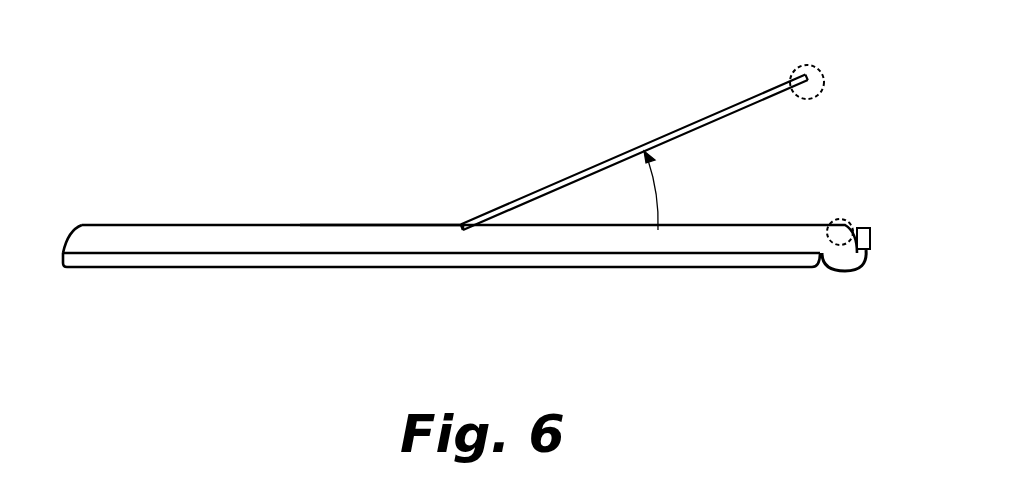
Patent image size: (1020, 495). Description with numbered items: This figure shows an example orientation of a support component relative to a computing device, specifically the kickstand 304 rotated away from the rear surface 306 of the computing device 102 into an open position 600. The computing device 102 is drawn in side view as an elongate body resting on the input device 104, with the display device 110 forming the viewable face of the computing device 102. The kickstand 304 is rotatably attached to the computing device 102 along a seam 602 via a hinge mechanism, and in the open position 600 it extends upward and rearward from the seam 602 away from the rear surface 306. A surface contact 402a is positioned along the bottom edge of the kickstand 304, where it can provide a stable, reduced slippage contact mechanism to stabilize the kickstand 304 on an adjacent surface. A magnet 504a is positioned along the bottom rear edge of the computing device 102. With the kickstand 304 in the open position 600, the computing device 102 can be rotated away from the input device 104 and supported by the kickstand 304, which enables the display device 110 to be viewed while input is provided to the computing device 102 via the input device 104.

The open position 600 is at (462, 112).
The computing device 102 is at (122, 232).
The input device 104 is at (110, 268).
The display device 110 is at (235, 255).
The rear surface 306 is at (345, 222).
The seam 602 is at (461, 219).
The kickstand 304 is at (625, 155).
The surface contact 402a is at (802, 63).
The magnet 504a is at (848, 221).